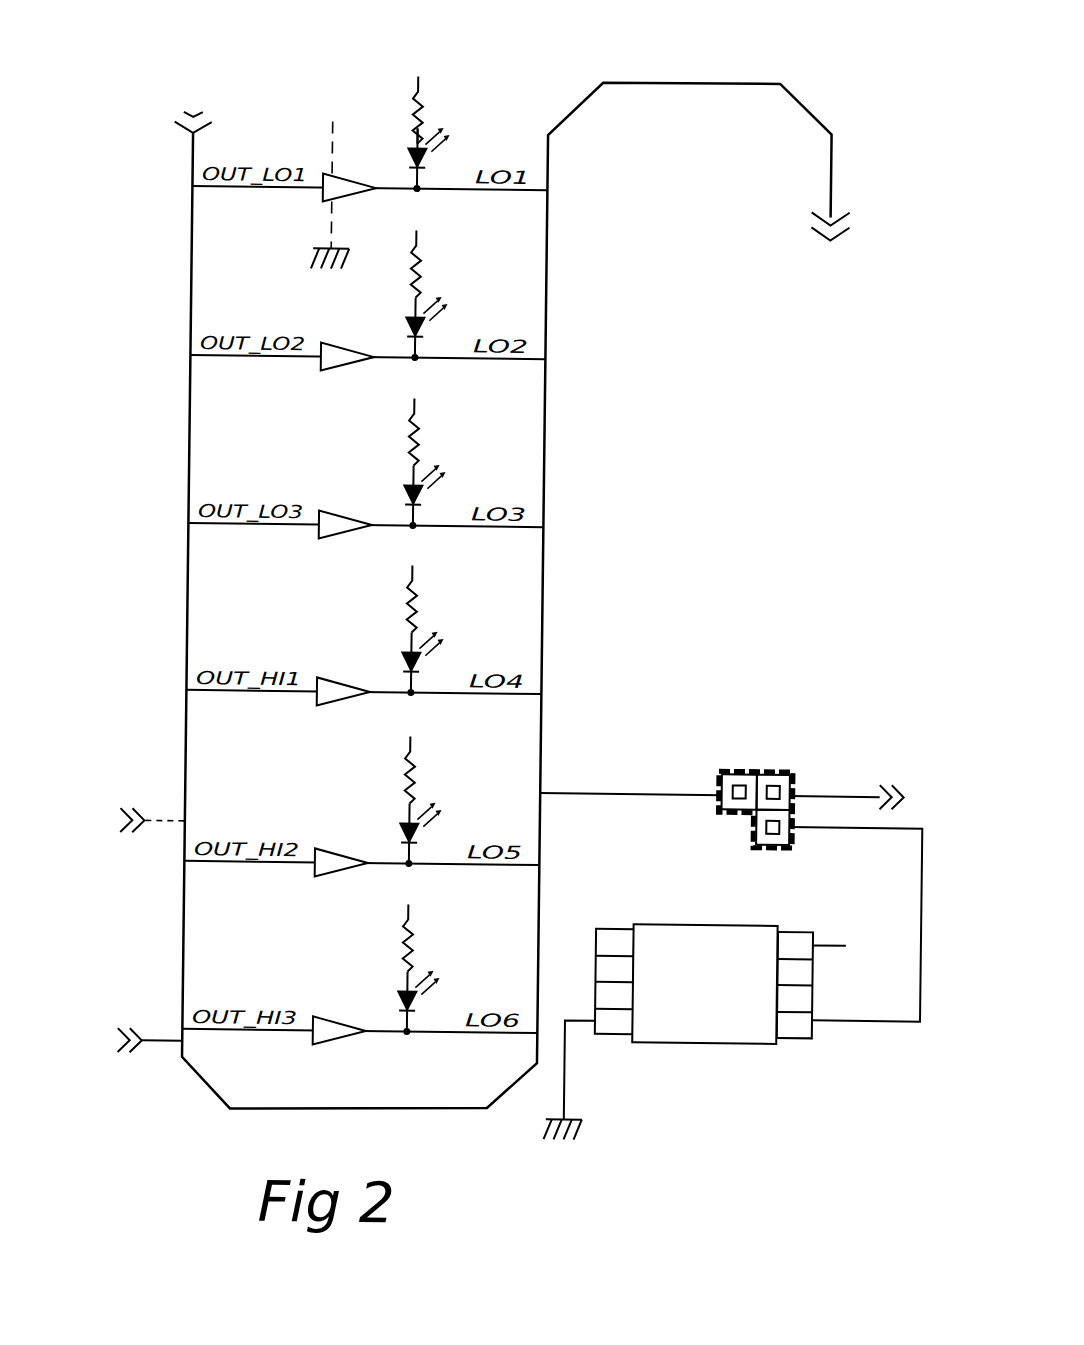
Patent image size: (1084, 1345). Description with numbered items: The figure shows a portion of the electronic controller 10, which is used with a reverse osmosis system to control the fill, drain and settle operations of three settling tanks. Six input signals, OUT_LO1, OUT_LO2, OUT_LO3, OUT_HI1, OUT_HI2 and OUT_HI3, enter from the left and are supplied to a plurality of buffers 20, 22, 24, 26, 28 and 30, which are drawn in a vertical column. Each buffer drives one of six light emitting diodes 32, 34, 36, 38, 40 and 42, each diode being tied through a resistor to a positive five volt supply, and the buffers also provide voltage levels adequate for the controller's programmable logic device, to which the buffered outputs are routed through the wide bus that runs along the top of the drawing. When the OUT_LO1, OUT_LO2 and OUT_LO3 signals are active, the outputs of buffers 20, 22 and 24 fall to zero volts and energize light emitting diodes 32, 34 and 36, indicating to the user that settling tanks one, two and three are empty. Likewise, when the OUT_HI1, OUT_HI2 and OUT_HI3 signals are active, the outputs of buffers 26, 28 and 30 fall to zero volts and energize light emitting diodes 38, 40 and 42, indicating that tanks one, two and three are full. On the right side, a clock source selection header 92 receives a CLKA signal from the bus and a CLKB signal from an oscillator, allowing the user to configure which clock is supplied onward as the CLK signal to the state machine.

The electronic controller 10 is at (838, 82).
The buffer 20 is at (318, 200).
The buffer 22 is at (318, 369).
The buffer 24 is at (318, 537).
The buffer 26 is at (318, 704).
The buffer 28 is at (318, 875).
The buffer 30 is at (318, 1044).
The light emitting diode 32 is at (418, 160).
The light emitting diode 34 is at (418, 329).
The light emitting diode 36 is at (418, 497).
The light emitting diode 38 is at (418, 664).
The light emitting diode 40 is at (418, 835).
The light emitting diode 42 is at (418, 1003).
The clock source selection header 92 is at (750, 765).